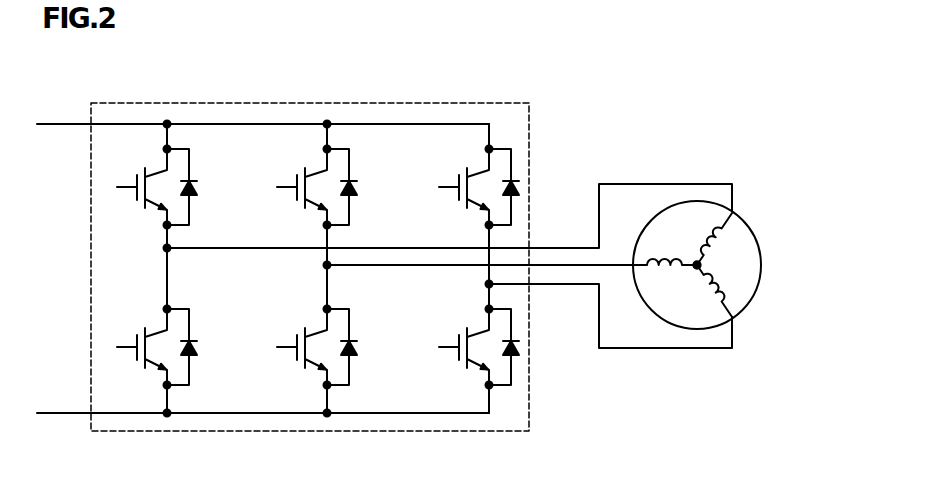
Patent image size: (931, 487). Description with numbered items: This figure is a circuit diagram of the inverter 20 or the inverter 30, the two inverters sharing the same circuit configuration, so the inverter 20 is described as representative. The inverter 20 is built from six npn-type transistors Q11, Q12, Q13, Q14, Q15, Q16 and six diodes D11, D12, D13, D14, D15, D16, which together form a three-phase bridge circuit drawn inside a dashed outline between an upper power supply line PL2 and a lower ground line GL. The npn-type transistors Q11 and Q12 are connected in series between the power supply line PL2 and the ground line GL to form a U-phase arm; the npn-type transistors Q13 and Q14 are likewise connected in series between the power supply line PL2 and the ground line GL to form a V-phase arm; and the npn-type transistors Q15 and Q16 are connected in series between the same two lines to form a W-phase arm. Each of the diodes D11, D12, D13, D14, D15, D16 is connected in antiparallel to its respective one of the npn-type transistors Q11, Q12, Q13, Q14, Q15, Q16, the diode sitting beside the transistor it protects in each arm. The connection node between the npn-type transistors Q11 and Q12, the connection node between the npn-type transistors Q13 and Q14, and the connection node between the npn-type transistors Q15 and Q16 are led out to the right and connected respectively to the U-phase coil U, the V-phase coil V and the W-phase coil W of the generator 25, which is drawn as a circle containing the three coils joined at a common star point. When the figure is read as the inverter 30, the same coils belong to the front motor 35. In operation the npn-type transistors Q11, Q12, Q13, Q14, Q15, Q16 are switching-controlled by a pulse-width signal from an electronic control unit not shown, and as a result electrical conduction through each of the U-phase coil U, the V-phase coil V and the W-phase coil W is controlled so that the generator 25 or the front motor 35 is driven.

The power supply line PL2 is at (64, 124).
The ground line GL is at (63, 413).
The inverter 20 is at (310, 252).
The inverter 30 is at (410, 103).
The generator 25 is at (735, 265).
The front motor 35 is at (697, 265).
The npn-type transistor Q11 is at (138, 177).
The npn-type transistor Q12 is at (138, 337).
The npn-type transistor Q13 is at (298, 177).
The npn-type transistor Q14 is at (298, 337).
The npn-type transistor Q15 is at (460, 177).
The npn-type transistor Q16 is at (460, 337).
The diode D11 is at (197, 188).
The diode D12 is at (197, 348).
The diode D13 is at (357, 188).
The diode D14 is at (357, 348).
The diode D15 is at (519, 188).
The diode D16 is at (519, 348).
The U-phase coil U is at (714, 237).
The V-phase coil V is at (665, 249).
The W-phase coil W is at (712, 290).